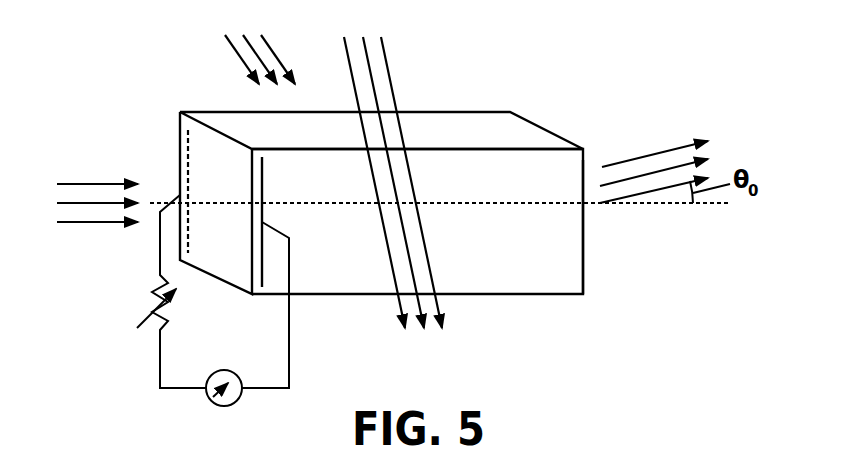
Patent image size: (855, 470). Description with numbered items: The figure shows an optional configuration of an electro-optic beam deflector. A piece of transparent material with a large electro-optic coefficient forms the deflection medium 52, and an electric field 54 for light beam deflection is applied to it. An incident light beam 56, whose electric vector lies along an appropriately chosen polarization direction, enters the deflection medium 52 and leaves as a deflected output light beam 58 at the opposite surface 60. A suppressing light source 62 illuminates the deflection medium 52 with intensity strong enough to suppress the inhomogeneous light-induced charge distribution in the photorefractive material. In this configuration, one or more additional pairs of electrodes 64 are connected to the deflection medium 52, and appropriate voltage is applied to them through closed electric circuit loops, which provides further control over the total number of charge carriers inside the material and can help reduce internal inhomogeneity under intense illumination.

The deflection medium 52 is at (483, 111).
The electric field for light beam deflection 54 is at (390, 75).
The incident light beam 56 is at (87, 183).
The deflected output light beam 58 is at (657, 152).
The opposite surface 60 is at (583, 267).
The suppressing light source 62 is at (272, 50).
The electrodes 64 is at (185, 147).